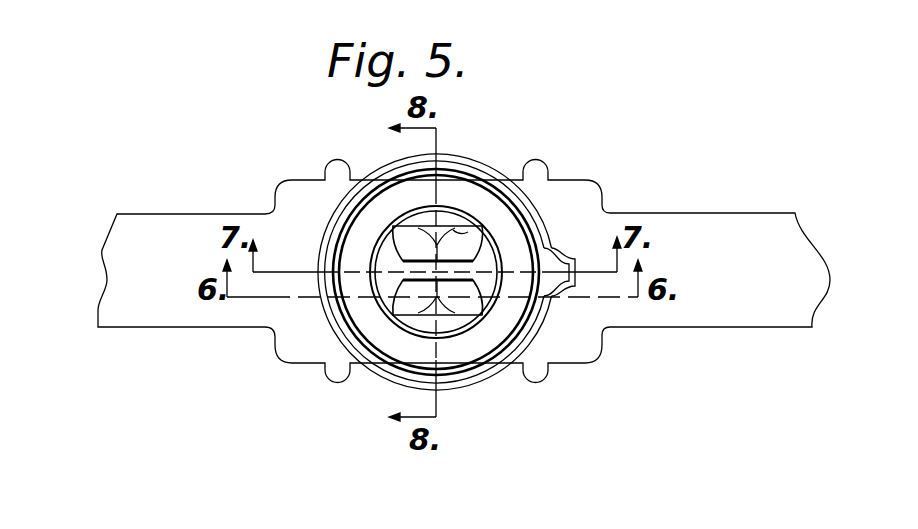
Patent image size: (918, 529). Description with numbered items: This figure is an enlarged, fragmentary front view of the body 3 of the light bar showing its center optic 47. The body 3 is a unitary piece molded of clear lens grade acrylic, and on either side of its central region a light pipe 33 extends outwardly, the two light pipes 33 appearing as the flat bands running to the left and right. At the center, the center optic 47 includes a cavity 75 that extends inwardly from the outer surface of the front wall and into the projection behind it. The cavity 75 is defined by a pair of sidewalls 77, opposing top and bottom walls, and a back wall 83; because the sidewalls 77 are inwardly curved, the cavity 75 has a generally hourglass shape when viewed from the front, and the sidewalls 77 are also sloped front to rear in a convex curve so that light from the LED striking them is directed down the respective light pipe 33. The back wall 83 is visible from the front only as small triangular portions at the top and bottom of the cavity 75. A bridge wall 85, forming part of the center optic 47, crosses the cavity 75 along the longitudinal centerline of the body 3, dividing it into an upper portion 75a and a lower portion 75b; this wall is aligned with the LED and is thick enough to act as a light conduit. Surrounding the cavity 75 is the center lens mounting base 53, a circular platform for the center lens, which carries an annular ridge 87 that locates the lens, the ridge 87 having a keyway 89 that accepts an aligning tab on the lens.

The body 3 is at (167, 209).
The light pipe 33 is at (163, 330).
The center optic 47 is at (486, 251).
The center lens mounting base 53 is at (507, 312).
The cavity 75 is at (411, 259).
The upper portion of the cavity 75a is at (482, 228).
The lower portion of the cavity 75b is at (460, 292).
The sidewall 77 is at (357, 237).
The back wall 83 is at (437, 228).
The bridge wall 85 is at (398, 274).
The annular ridge 87 is at (376, 170).
The keyway 89 is at (571, 259).